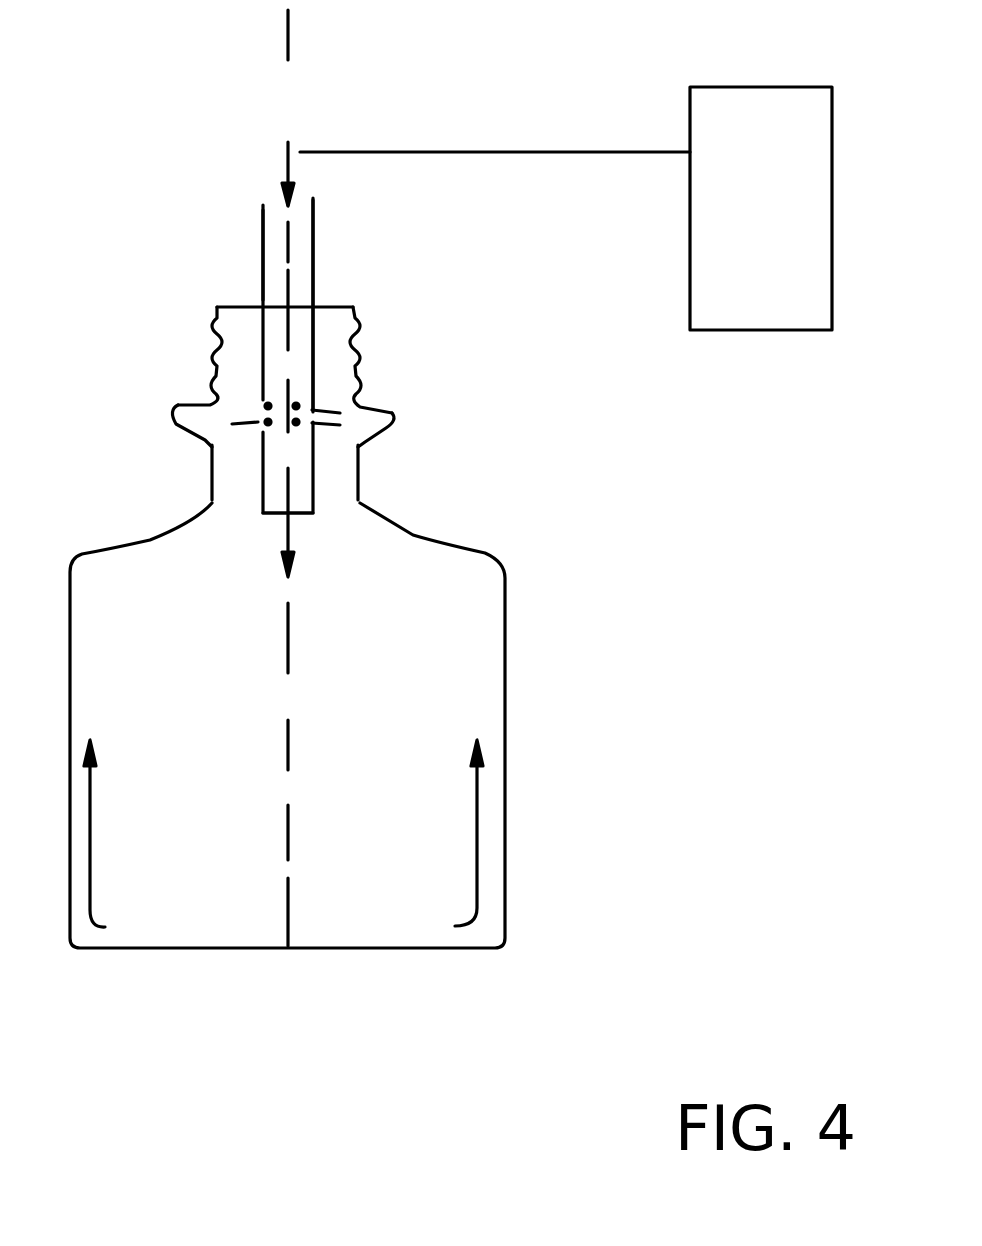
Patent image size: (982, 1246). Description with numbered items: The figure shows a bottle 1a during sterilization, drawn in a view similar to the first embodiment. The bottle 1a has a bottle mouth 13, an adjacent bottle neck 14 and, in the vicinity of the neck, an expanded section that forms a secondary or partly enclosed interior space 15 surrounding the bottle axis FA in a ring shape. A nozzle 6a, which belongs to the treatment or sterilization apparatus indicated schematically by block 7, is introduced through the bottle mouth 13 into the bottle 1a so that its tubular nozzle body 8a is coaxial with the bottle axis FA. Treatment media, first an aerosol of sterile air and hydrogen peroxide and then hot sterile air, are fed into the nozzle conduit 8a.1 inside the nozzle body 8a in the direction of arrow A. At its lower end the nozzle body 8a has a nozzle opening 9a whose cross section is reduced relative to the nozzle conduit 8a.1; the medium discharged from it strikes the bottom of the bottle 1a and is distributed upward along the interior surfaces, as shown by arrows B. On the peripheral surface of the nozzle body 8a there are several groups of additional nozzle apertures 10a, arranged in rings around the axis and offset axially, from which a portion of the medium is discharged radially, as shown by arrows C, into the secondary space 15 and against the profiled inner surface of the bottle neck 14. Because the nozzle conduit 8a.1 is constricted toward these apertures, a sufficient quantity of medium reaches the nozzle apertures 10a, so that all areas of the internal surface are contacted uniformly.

The bottle 1a is at (535, 565).
The nozzle 6a is at (328, 262).
The block 7 is at (780, 228).
The nozzle body 8a is at (315, 285).
The nozzle conduit 8a.1 is at (276, 268).
The nozzle opening 9a is at (270, 518).
The nozzle apertures 10a is at (305, 405).
The bottle mouth 13 is at (243, 304).
The bottle neck 14 is at (360, 463).
The secondary or partly enclosed interior space 15 is at (392, 413).
The arrow A is at (283, 165).
The arrow B is at (283, 833).
The arrow C is at (238, 401).
The bottle axis FA is at (290, 42).